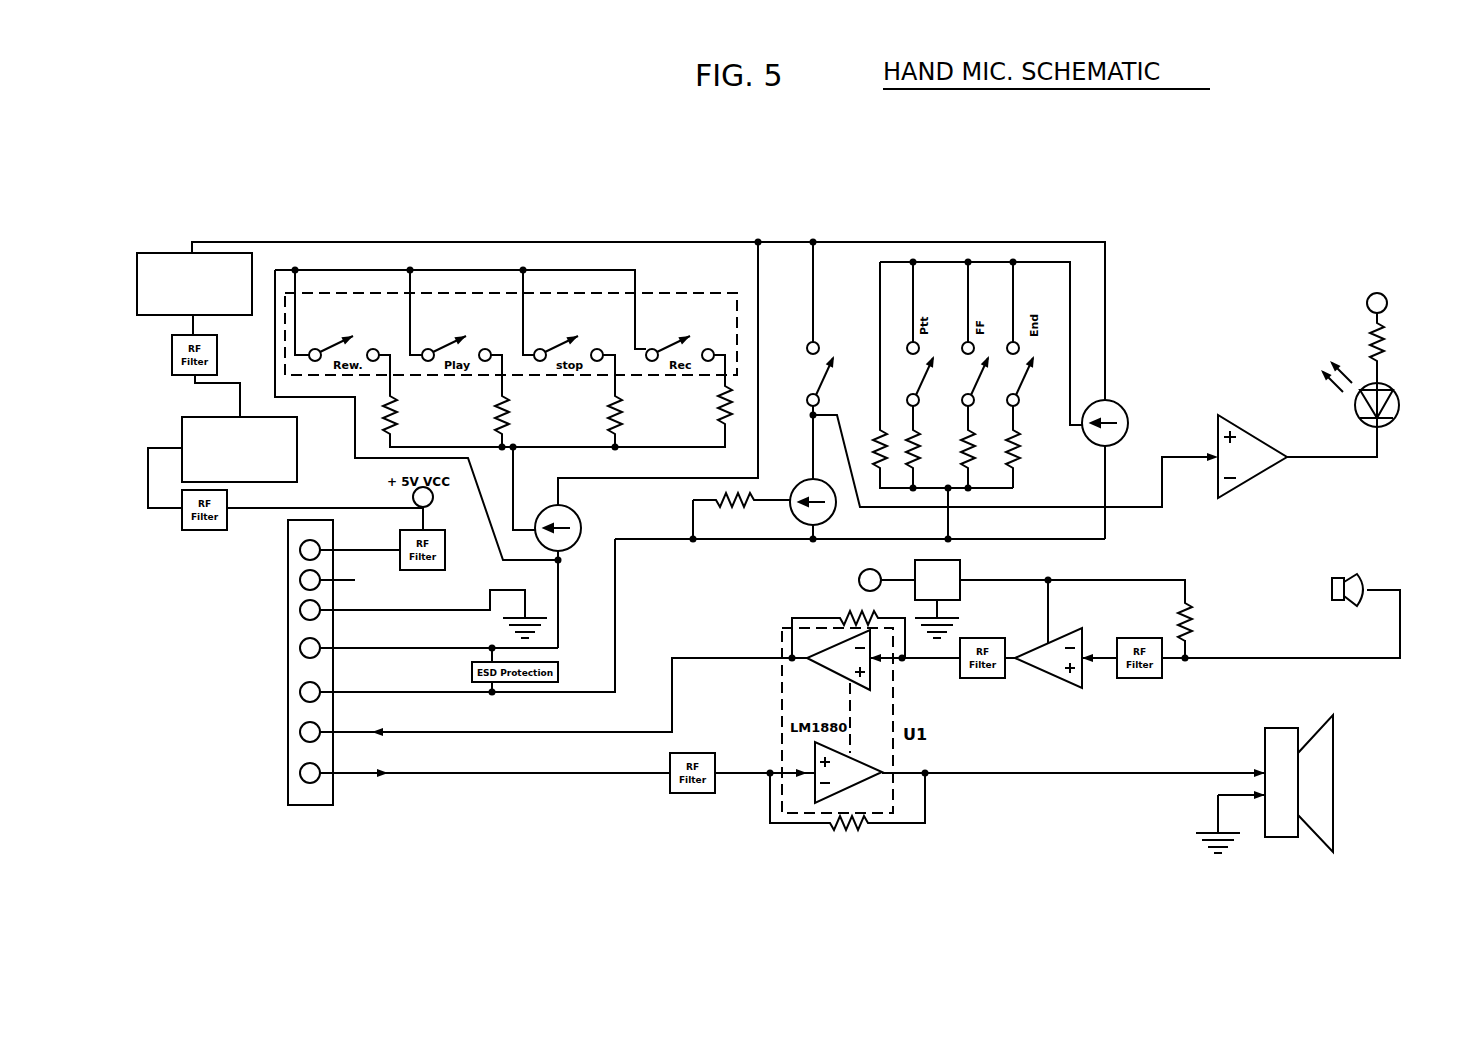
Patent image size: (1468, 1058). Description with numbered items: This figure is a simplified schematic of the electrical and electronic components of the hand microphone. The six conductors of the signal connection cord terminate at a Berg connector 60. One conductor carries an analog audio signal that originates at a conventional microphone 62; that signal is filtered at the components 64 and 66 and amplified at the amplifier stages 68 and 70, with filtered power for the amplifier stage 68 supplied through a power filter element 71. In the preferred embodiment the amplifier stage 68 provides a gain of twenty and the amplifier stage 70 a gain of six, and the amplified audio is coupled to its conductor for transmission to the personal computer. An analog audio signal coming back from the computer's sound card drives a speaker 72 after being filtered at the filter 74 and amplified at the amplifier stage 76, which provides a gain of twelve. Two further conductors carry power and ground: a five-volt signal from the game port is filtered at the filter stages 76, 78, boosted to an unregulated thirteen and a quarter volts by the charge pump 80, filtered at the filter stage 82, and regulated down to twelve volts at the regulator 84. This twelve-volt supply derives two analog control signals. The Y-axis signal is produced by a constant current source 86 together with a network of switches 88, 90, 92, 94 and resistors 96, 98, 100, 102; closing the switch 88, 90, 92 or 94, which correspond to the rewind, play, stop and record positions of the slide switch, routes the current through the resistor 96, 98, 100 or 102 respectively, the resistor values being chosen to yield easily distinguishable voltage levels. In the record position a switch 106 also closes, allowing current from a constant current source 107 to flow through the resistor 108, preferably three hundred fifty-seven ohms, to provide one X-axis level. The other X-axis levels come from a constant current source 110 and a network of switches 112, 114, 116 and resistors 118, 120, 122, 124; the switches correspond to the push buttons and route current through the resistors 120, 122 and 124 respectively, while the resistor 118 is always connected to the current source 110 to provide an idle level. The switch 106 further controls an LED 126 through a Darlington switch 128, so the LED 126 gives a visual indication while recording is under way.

The Berg connector 60 is at (300, 805).
The microphone 62 is at (1352, 576).
The filter component 64 is at (1137, 680).
The filter component 66 is at (975, 680).
The amplifier stage 68 is at (1055, 686).
The amplifier stage 70 is at (823, 672).
The power filter element 71 is at (960, 566).
The speaker 72 is at (1290, 837).
The filter 74 is at (690, 793).
The amplifier stage 76 is at (445, 556).
The filter stage 78 is at (200, 530).
The charge pump 80 is at (188, 419).
The filter stage 82 is at (217, 356).
The regulator 84 is at (137, 302).
The constant current source 86 is at (581, 521).
The switch 88 is at (348, 316).
The switch 90 is at (462, 321).
The switch 92 is at (588, 321).
The switch 94 is at (683, 321).
The resistor 96 is at (397, 433).
The resistor 98 is at (509, 430).
The resistor 100 is at (622, 430).
The resistor 102 is at (718, 414).
The switch 106 is at (793, 355).
The constant current source 107 is at (833, 517).
The resistor 108 is at (760, 507).
The constant current source 110 is at (1128, 427).
The switch 112 is at (918, 374).
The switch 114 is at (960, 384).
The switch 116 is at (1034, 382).
The resistor 118 is at (880, 426).
The resistor 120 is at (920, 432).
The resistor 122 is at (962, 464).
The resistor 124 is at (1020, 466).
The LED 126 is at (1392, 382).
The Darlington switch 128 is at (1258, 470).